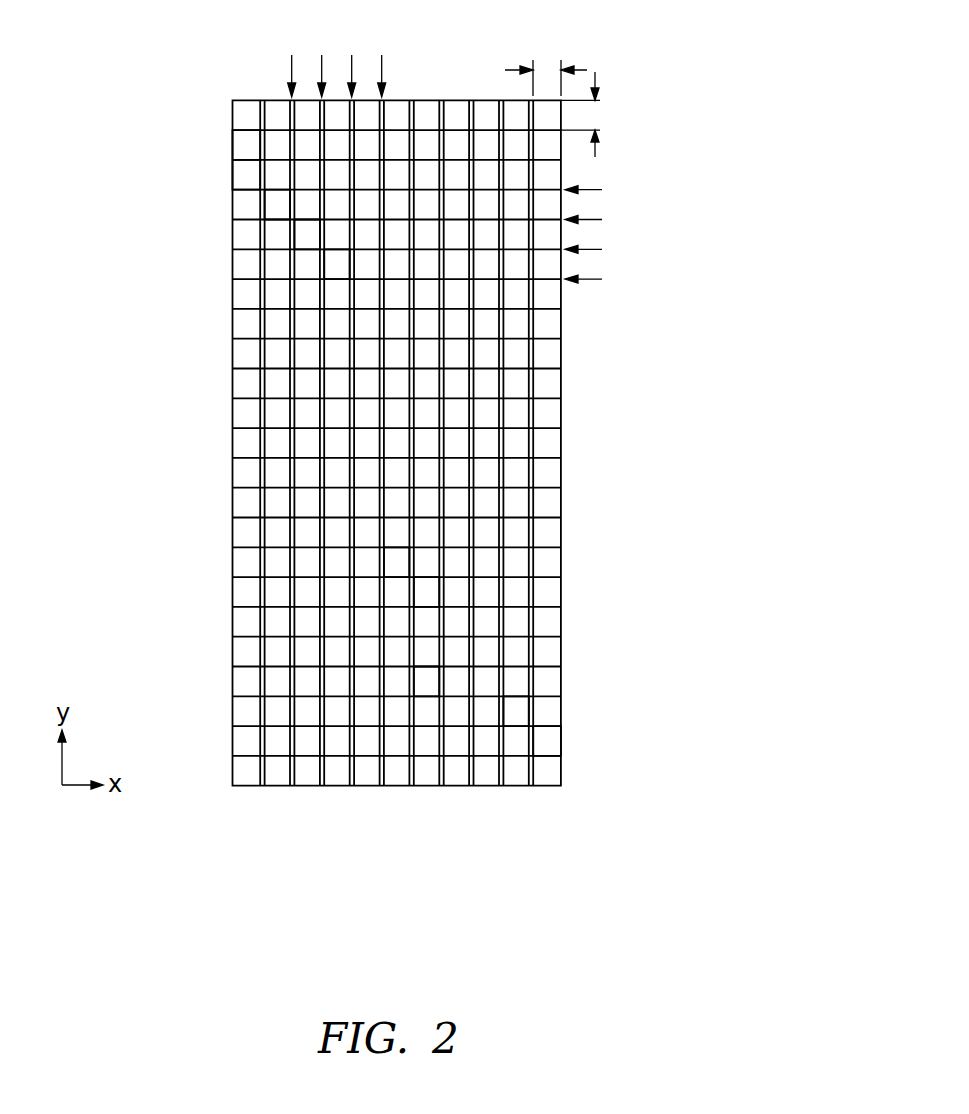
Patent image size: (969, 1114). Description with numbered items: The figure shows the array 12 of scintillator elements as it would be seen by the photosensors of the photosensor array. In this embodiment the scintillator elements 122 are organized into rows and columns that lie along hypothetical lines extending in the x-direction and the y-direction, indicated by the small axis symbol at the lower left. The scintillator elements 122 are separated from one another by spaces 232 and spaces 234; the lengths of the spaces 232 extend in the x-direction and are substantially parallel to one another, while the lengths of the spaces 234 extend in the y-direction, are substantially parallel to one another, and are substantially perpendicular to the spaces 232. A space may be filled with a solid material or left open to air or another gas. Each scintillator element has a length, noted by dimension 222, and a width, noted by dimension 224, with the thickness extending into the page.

The array 12 is at (727, 42).
The scintillator elements 122 is at (332, 263).
The dimension 222 is at (603, 114).
The dimension 224 is at (546, 63).
The spaces 232 is at (607, 234).
The spaces 234 is at (337, 61).